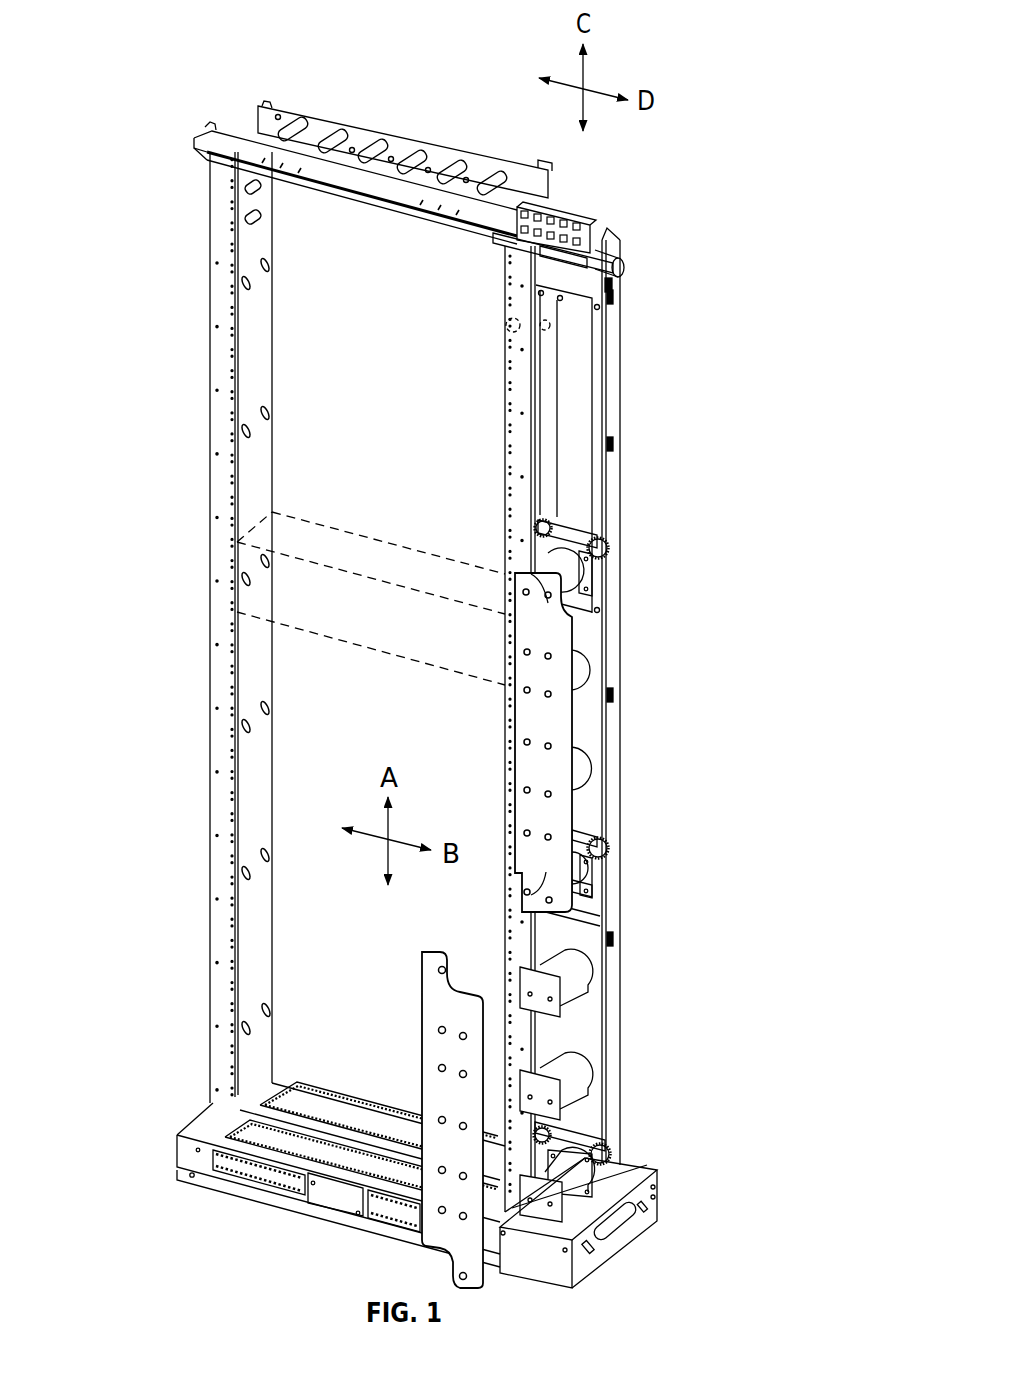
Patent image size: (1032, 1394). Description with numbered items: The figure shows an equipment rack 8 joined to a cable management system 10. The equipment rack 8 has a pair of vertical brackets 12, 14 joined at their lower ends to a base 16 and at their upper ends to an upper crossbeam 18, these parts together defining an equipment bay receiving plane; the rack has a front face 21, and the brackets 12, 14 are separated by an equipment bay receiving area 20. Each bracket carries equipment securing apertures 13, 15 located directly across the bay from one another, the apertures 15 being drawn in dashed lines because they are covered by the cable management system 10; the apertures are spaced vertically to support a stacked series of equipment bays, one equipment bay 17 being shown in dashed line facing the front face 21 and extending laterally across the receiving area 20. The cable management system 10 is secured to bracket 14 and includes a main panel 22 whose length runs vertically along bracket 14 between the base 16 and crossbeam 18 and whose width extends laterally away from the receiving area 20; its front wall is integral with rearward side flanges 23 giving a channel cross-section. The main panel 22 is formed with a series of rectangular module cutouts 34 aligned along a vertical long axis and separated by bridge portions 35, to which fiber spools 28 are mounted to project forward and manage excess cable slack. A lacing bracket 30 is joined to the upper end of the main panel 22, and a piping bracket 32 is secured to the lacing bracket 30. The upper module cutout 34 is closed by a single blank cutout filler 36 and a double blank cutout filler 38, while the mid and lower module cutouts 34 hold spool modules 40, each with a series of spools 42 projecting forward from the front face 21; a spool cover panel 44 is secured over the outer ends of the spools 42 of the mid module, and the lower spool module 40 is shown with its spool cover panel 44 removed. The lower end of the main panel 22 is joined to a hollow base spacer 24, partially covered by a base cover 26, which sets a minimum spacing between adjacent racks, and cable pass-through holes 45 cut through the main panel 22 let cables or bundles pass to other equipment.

The equipment rack 8 is at (562, 150).
The cable management system 10 is at (658, 178).
The vertical bracket 12 is at (265, 465).
The equipment securing apertures 13 is at (278, 265).
The vertical bracket 14 is at (522, 478).
The equipment securing apertures 15 is at (500, 323).
The base 16 is at (180, 1127).
The equipment bay 17 is at (398, 632).
The upper crossbeam 18 is at (440, 150).
The equipment bay receiving area 20 is at (400, 421).
The front face 21 is at (185, 303).
The main panel 22 is at (600, 903).
The side flanges 23 is at (612, 972).
The base spacer 24 is at (668, 1200).
The base cover 26 is at (630, 1180).
The fiber spools 28 is at (598, 887).
The lacing bracket 30 is at (592, 233).
The piping bracket 32 is at (610, 283).
The module cutouts 34 is at (623, 405).
The bridge portions 35 is at (629, 558).
The single blank cutout filler 36 is at (547, 352).
The double blank cutout filler 38 is at (584, 482).
The spool module 40 is at (497, 728).
The spools 42 is at (578, 780).
The spool cover panel 44 is at (437, 1012).
The cable pass-through holes 45 is at (613, 848).